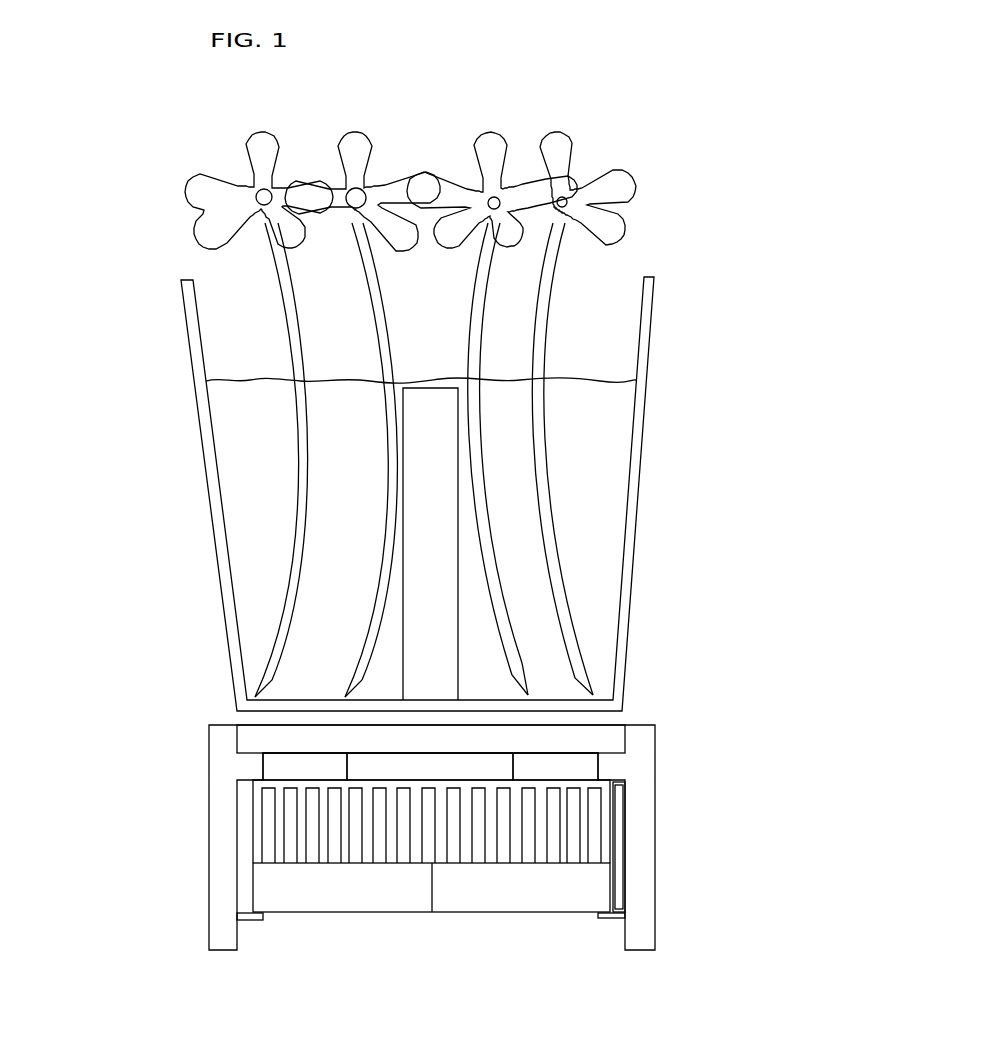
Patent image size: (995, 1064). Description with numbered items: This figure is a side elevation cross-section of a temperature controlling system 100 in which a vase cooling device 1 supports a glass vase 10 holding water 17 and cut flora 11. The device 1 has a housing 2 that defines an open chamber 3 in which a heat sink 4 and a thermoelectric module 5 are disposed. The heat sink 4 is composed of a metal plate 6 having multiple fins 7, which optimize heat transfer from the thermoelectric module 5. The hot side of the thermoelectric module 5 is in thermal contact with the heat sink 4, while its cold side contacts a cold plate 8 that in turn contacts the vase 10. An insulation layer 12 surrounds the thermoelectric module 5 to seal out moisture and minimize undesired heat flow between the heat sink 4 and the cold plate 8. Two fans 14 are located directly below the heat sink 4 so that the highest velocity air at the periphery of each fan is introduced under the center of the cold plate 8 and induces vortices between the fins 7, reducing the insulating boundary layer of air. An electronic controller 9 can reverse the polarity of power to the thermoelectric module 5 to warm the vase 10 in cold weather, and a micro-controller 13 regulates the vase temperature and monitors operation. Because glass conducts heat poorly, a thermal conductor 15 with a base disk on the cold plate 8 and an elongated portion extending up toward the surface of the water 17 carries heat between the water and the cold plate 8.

The vase cooling device 1 is at (199, 703).
The housing 2 is at (218, 787).
The open chamber 3 is at (247, 810).
The heat sink 4 is at (186, 818).
The thermoelectric module 5 is at (363, 762).
The metal plate 6 is at (281, 787).
The fins 7 is at (269, 880).
The cold plate 8 is at (600, 737).
The electronic controller 9 is at (652, 812).
The vase 10 is at (637, 465).
The flora 11 is at (385, 182).
The insulation layer 12 is at (670, 740).
The micro-controller 13 is at (617, 873).
The fans 14 is at (535, 890).
The thermal conductor 15 is at (610, 717).
The water 17 is at (580, 407).
The temperature controlling system 100 is at (695, 222).